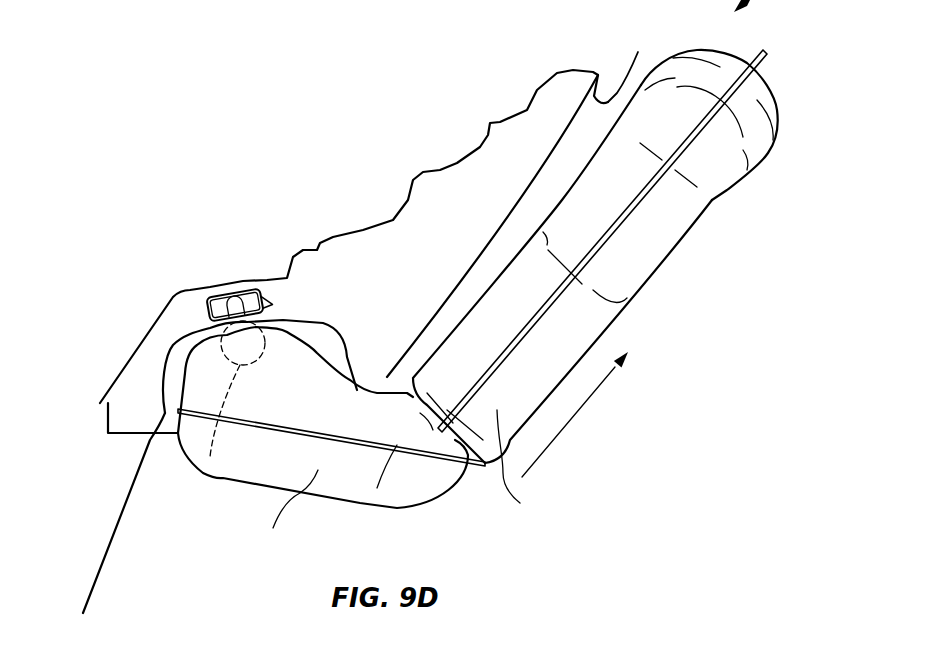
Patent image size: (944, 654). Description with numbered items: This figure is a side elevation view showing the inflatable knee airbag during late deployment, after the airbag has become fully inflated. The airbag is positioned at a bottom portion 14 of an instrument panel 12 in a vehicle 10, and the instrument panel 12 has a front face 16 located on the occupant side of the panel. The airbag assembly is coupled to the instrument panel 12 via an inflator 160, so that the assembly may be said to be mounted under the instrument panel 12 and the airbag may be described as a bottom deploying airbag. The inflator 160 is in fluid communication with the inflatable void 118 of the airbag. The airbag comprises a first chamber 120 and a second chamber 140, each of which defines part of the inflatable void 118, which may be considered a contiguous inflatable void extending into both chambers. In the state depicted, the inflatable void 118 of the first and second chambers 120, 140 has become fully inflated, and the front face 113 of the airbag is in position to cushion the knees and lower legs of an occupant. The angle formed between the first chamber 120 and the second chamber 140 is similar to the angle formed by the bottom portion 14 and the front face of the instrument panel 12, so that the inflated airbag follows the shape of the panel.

The vehicle 10 is at (421, 82).
The instrument panel 12 is at (547, 125).
The bottom portion 14 is at (130, 405).
The front face 16 is at (632, 66).
The front face 113 is at (617, 270).
The inflatable void 118 is at (402, 483).
The first chamber 120 is at (700, 262).
The second chamber 140 is at (222, 500).
The inflator 160 is at (200, 328).